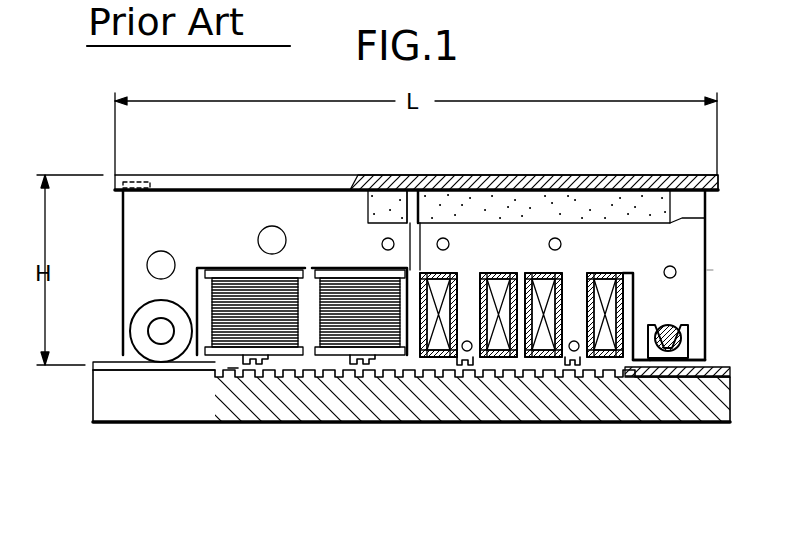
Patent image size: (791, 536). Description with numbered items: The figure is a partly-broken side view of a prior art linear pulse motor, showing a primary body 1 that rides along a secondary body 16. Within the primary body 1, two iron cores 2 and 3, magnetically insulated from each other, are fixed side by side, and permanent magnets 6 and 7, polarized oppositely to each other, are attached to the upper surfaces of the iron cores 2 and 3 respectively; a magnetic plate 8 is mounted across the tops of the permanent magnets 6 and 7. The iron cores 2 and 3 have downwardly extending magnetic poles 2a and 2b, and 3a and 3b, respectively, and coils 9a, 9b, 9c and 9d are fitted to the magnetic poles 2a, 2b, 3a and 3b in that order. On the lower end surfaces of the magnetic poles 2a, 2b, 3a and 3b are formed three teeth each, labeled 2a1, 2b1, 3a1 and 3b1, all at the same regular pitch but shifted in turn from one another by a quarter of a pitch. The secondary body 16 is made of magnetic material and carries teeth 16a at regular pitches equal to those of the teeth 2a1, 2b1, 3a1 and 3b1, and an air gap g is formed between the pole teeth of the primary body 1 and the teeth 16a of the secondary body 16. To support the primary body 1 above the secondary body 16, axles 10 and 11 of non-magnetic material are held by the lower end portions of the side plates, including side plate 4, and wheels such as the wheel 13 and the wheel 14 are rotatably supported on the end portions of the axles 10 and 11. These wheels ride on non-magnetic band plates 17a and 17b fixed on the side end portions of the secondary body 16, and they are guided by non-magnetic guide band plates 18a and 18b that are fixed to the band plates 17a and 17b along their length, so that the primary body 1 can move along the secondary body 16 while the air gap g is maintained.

The primary body 1 is at (716, 272).
The iron core 2 is at (686, 309).
The magnetic pole 2a is at (605, 345).
The teeth 2a1 is at (600, 358).
The magnetic pole 2b is at (447, 345).
The teeth 2b1 is at (440, 358).
The iron core 3 is at (403, 240).
The magnetic pole 3a is at (385, 335).
The teeth 3a1 is at (378, 356).
The magnetic pole 3b is at (285, 333).
The teeth 3b1 is at (262, 356).
The side plate 4 is at (291, 218).
The permanent magnet 6 is at (592, 216).
The permanent magnet 7 is at (376, 215).
The magnetic plate 8 is at (498, 186).
The coil 9a is at (572, 365).
The coil 9b is at (463, 365).
The coil 9c is at (360, 364).
The coil 9d is at (252, 364).
The air gap g is at (232, 370).
The axle 10 is at (663, 327).
The axle 11 is at (155, 338).
The wheel 13 is at (720, 400).
The wheel 14 is at (147, 318).
The secondary body 16 is at (680, 385).
The teeth 16a is at (640, 363).
The band plate 17a is at (140, 371).
The band plate 17b is at (716, 375).
The guide band plate 18a is at (113, 364).
The guide band plate 18b is at (713, 366).